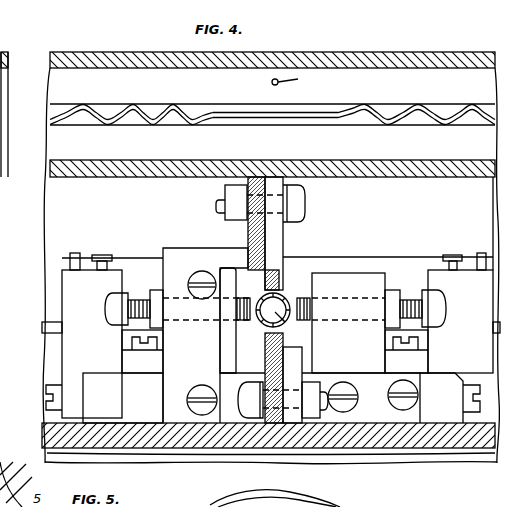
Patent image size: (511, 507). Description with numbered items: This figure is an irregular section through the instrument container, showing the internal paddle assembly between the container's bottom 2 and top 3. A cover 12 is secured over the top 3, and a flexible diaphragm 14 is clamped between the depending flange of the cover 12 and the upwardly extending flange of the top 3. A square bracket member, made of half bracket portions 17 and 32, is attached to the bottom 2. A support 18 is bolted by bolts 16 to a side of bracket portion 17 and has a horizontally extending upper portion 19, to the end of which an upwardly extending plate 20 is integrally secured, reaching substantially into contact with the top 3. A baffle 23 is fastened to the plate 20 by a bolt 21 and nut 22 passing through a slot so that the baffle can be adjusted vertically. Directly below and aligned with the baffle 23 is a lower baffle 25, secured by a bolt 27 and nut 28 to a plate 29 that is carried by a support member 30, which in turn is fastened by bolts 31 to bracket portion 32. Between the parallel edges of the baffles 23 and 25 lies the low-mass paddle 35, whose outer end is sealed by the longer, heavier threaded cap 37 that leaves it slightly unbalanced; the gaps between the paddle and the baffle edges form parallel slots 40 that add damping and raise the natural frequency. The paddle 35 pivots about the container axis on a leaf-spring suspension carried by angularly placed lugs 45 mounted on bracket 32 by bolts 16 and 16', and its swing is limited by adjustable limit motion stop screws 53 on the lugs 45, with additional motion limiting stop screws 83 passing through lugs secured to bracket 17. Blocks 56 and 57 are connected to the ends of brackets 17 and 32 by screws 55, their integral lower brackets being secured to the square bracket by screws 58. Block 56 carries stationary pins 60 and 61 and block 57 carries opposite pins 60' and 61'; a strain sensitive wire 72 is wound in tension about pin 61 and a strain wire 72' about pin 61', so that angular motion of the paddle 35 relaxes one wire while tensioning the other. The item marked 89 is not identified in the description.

The cover 12 is at (115, 57).
The top 3 is at (170, 164).
The flexible diaphragm 14 is at (57, 104).
The small pin 89 is at (296, 84).
The nut 22 is at (227, 191).
The bolt 21 is at (296, 195).
The upwardly extending plate 20 is at (253, 235).
The baffle 23 is at (278, 238).
The support 18 is at (180, 250).
The horizontally extending upper portion 19 is at (238, 257).
The bolt 16 is at (197, 390).
The bolt 16' is at (341, 383).
The bolt 31 is at (399, 382).
The parallel slot 40 is at (276, 286).
The paddle 35 is at (289, 296).
The threaded cap 37 is at (302, 333).
The lug 45 is at (363, 273).
The strain sensitive wire 72 is at (112, 236).
The strain wire 72' is at (388, 245).
The pin 60 is at (101, 249).
The pin 60' is at (444, 252).
The pin 61 is at (68, 249).
The pin 61' is at (474, 251).
The block 56 is at (63, 275).
The motion limiting stop screw 83 is at (110, 302).
The limit motion stop screw 53 is at (440, 296).
The screw 58 is at (130, 343).
The block 57 is at (460, 321).
The half bracket portion 32 is at (450, 398).
The screw 55 is at (46, 409).
The half bracket portion 17 is at (123, 398).
The bottom 2 is at (114, 432).
The lower baffle 25 is at (266, 336).
The plate 29 is at (292, 420).
The bolt 27 is at (249, 420).
The nut 28 is at (309, 420).
The support member 30 is at (373, 418).